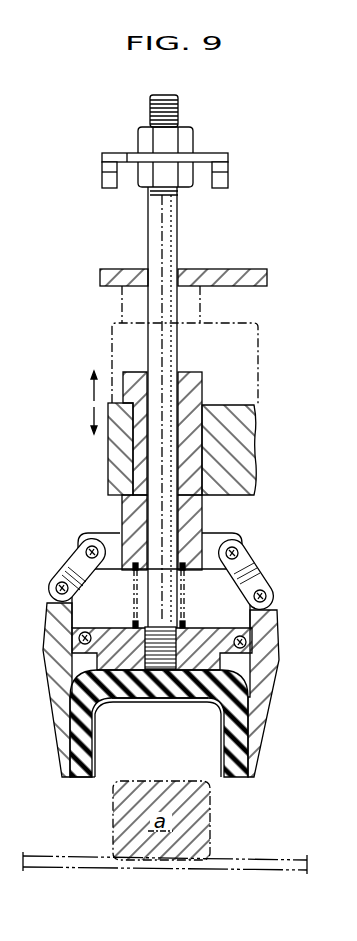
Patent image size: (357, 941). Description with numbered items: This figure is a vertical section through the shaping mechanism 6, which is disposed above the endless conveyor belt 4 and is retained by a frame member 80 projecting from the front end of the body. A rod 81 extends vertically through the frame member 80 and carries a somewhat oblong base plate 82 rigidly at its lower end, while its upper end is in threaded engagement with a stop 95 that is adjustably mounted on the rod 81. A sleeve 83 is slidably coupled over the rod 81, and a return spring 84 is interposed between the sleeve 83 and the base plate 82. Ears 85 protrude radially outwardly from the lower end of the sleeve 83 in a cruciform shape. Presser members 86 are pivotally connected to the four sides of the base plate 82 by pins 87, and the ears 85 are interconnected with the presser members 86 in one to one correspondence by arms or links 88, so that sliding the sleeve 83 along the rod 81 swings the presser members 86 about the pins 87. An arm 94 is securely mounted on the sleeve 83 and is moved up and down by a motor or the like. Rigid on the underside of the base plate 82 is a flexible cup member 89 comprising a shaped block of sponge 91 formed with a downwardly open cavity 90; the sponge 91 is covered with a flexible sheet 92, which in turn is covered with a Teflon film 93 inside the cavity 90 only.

The endless conveyor belt 4 is at (260, 874).
The shaping mechanism 6 is at (73, 435).
The frame member 80 is at (242, 269).
The rod 81 is at (156, 229).
The base plate 82 is at (203, 630).
The sleeve 83 is at (140, 372).
The return spring 84 is at (134, 575).
The ears 85 is at (118, 533).
The presser members 86 is at (53, 716).
The pins 87 is at (86, 636).
The arms or links 88 is at (78, 566).
The flexible cup member 89 is at (74, 777).
The cavity 90 is at (155, 702).
The sponge 91 is at (78, 780).
The flexible sheet 92 is at (93, 752).
The Teflon film 93 is at (220, 734).
The arm 94 is at (248, 454).
The stop 95 is at (223, 181).